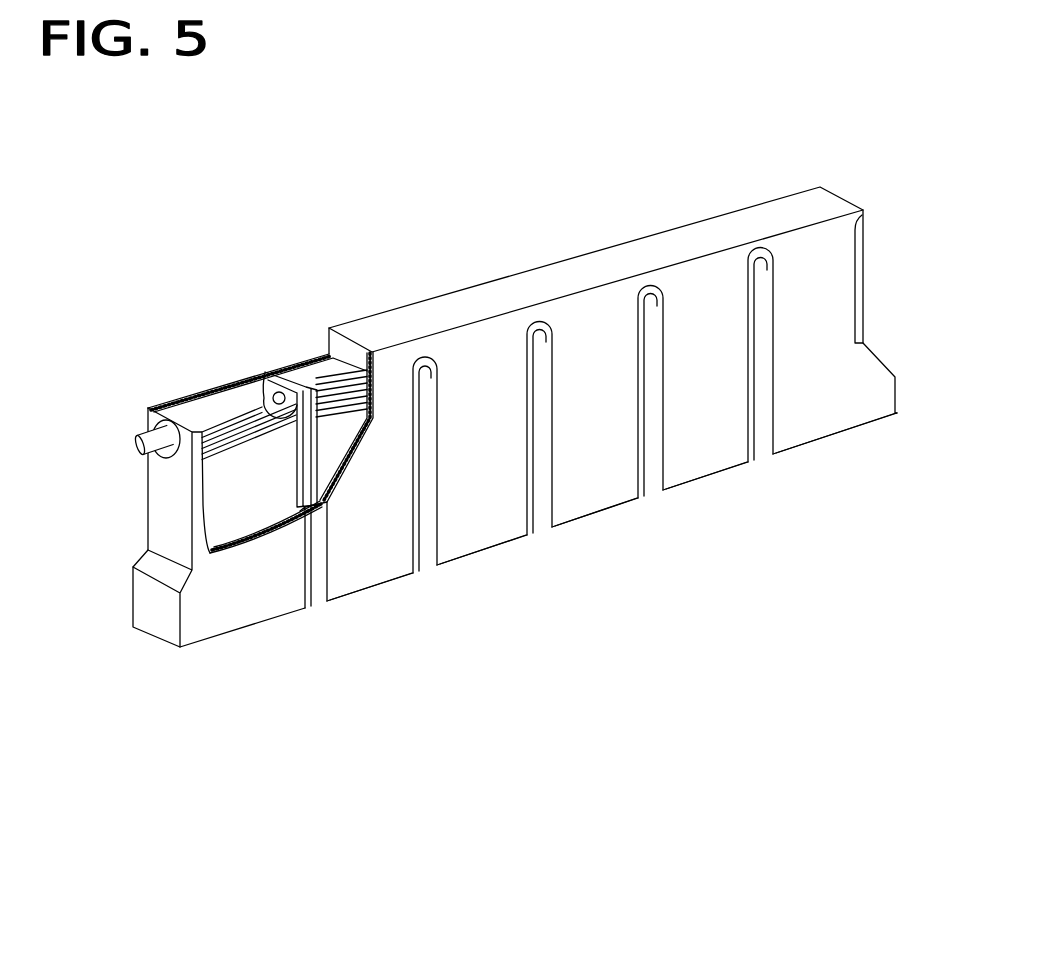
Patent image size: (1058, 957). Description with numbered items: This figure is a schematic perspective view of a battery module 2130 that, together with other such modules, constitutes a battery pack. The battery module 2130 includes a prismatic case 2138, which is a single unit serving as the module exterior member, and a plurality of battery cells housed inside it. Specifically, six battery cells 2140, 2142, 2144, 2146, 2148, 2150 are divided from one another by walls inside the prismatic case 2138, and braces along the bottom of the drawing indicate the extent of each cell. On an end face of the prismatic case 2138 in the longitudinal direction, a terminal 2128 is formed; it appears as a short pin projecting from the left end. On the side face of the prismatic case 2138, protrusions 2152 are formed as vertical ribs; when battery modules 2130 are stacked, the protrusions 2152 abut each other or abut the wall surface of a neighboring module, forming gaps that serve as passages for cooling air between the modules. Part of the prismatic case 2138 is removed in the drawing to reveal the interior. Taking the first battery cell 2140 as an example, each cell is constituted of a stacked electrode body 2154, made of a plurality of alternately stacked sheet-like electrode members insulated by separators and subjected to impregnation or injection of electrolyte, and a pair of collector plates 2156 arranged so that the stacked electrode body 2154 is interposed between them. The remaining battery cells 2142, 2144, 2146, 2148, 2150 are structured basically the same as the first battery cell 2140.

The terminal 2128 is at (135, 443).
The battery module 2130 is at (178, 698).
The prismatic case 2138 is at (383, 323).
The first battery cell 2140 is at (312, 617).
The battery cell 2142 is at (415, 580).
The battery cell 2144 is at (533, 542).
The battery cell 2146 is at (643, 503).
The battery cell 2148 is at (755, 468).
The battery cell 2150 is at (865, 430).
The protrusions 2152 is at (767, 270).
The stacked electrode body 2154 is at (215, 420).
The collector plates 2156 is at (262, 400).